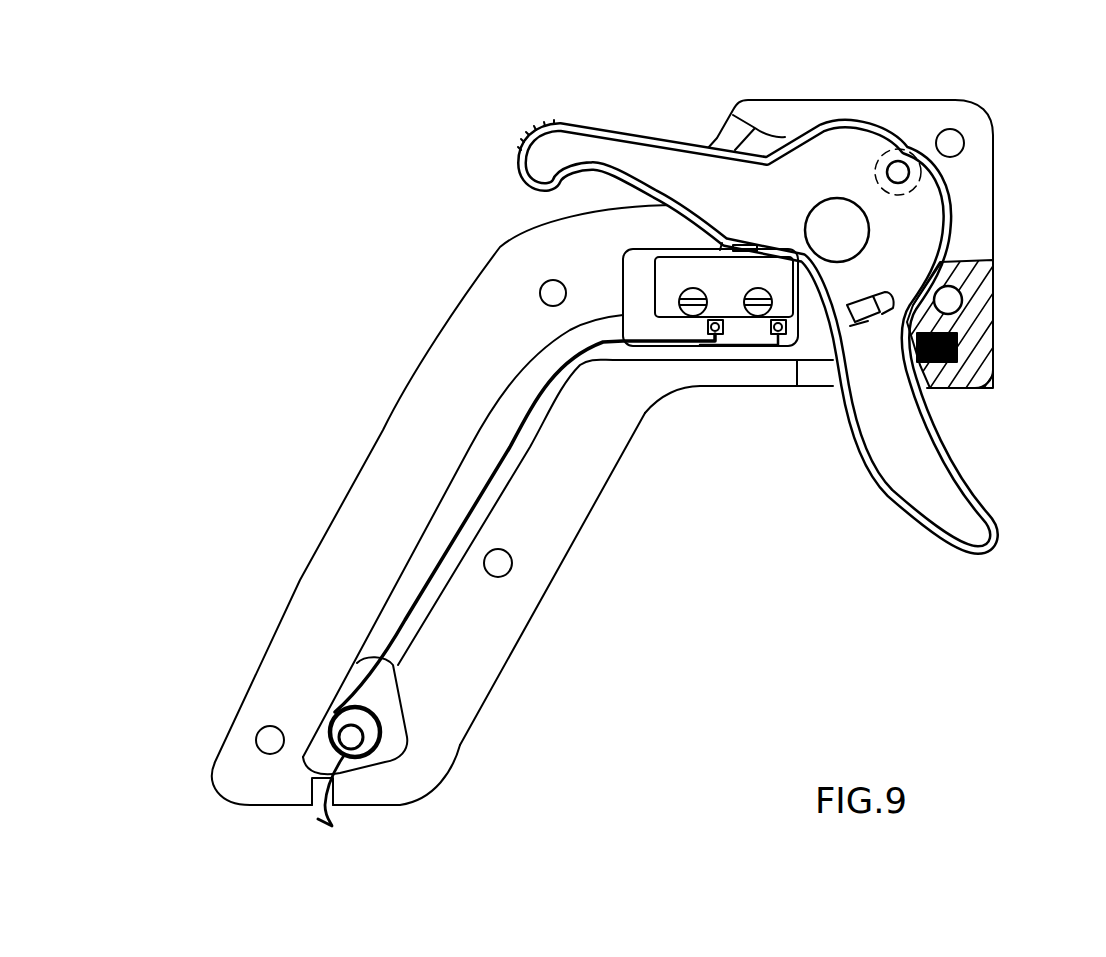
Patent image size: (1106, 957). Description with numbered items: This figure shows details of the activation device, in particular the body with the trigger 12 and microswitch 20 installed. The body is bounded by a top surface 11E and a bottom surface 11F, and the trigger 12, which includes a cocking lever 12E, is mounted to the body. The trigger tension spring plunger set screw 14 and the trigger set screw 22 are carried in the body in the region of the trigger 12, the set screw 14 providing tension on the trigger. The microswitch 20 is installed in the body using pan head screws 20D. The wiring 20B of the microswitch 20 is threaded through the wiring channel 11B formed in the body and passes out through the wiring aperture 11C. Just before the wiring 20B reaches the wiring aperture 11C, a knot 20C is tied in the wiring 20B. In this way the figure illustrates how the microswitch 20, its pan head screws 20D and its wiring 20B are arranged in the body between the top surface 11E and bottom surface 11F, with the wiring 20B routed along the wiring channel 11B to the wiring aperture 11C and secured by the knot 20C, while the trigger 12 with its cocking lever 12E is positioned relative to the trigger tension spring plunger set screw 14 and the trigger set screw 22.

The wiring channel 11B is at (574, 542).
The wiring aperture 11C is at (335, 792).
The top surface 11E is at (515, 238).
The bottom surface 11F is at (487, 700).
The trigger 12 is at (965, 552).
The cocking lever 12E is at (566, 121).
The trigger tension spring plunger set screw 14 is at (898, 161).
The microswitch 20 is at (770, 288).
The wiring 20B is at (463, 527).
The knot 20C is at (333, 710).
The pan head screws 20D is at (757, 288).
The trigger set screw 22 is at (960, 340).